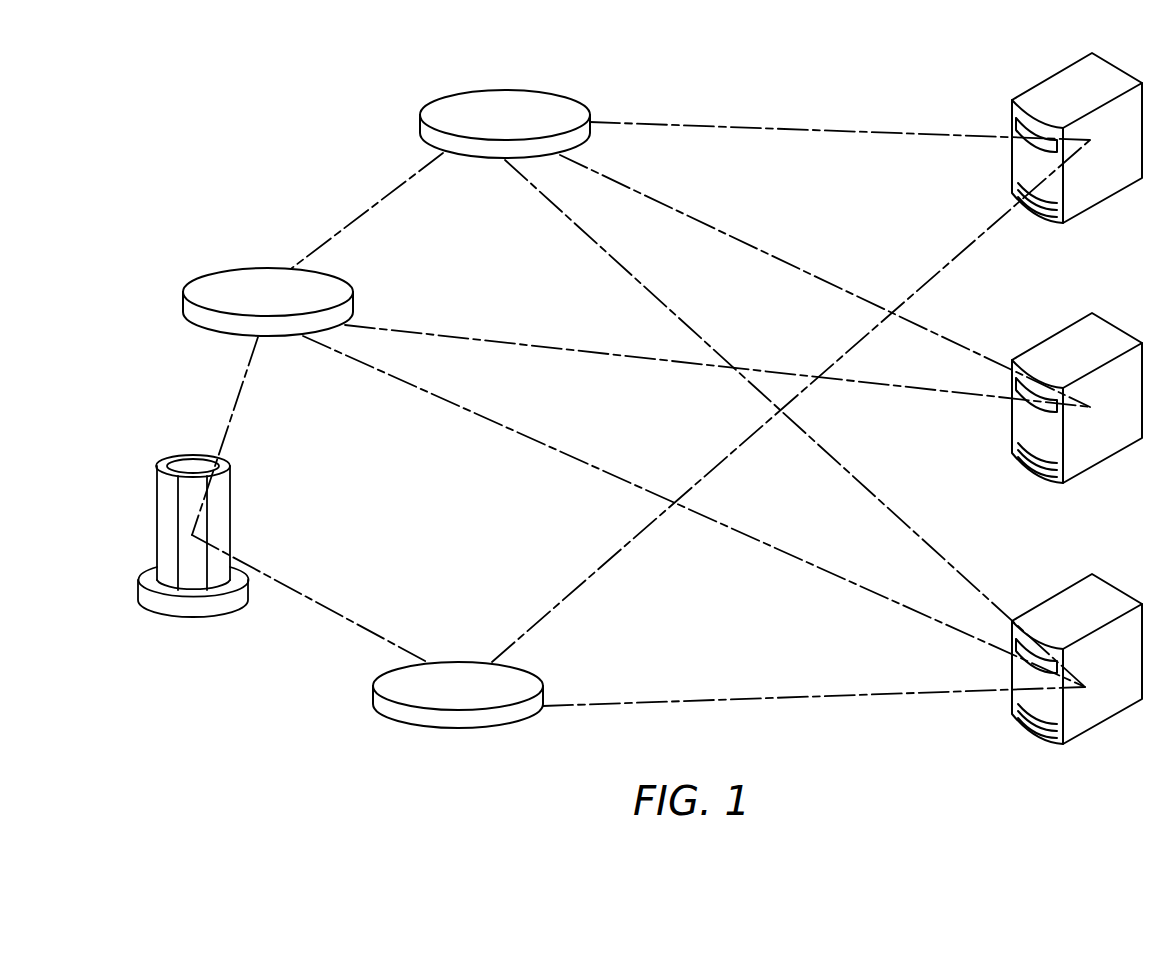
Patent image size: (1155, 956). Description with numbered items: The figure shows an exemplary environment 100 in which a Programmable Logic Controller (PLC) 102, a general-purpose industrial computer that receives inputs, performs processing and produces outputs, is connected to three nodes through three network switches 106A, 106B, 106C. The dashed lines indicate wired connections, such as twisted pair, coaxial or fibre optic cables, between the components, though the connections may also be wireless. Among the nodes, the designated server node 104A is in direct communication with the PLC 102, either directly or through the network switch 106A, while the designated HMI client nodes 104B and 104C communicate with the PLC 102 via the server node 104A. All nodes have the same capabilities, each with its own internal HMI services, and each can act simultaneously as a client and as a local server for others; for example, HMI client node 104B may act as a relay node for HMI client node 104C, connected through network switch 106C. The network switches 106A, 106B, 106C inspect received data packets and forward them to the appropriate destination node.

The environment 100 is at (222, 128).
The Programmable Logic Controller (PLC) 102 is at (157, 522).
The designated server node 104A is at (1038, 572).
The designated HMI client node 104B is at (1043, 317).
The designated HMI client node 104C is at (995, 90).
The network switch 106A is at (465, 670).
The network switch 106B is at (252, 290).
The network switch 106C is at (488, 110).